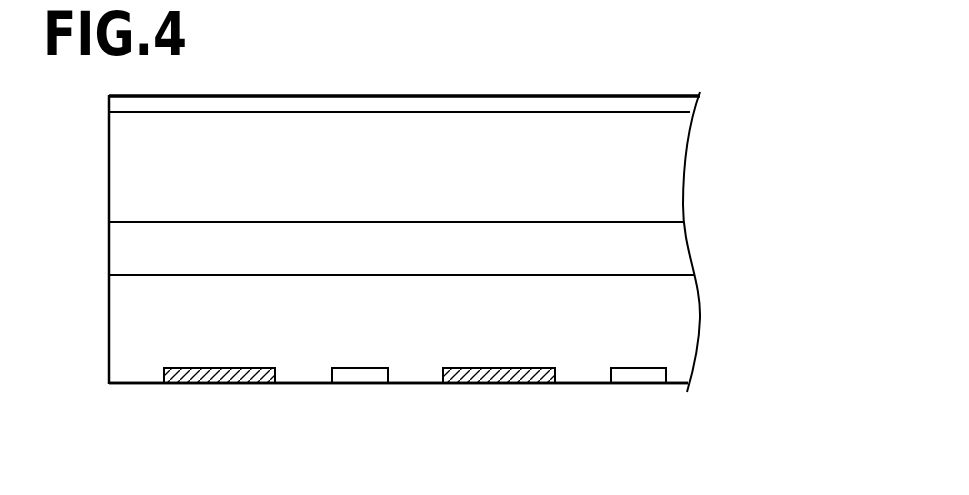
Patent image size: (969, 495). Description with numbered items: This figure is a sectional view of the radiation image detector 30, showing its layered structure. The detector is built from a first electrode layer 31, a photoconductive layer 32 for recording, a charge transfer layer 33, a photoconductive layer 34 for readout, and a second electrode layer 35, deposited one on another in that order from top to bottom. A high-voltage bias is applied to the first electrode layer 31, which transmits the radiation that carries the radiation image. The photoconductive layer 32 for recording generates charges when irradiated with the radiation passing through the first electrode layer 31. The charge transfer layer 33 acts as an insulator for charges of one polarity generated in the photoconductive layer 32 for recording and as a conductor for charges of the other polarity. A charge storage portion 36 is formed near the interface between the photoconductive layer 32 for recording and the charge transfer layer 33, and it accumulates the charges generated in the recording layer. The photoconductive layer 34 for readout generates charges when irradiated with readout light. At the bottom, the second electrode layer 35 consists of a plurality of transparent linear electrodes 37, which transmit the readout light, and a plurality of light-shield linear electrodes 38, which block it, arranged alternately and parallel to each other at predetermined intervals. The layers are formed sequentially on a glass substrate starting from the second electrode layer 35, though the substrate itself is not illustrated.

The radiation image detector 30 is at (690, 71).
The first electrode layer 31 is at (118, 100).
The photoconductive layer for recording 32 is at (118, 157).
The charge transfer layer 33 is at (118, 248).
The photoconductive layer for readout 34 is at (118, 297).
The second electrode layer 35 is at (362, 439).
The charge storage portion 36 is at (137, 219).
The transparent linear electrode 37 is at (344, 378).
The light-shield linear electrode 38 is at (195, 384).